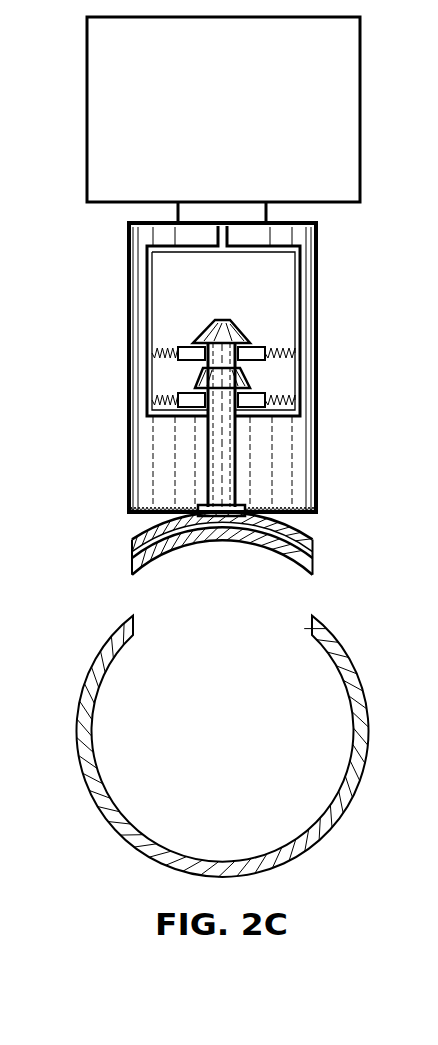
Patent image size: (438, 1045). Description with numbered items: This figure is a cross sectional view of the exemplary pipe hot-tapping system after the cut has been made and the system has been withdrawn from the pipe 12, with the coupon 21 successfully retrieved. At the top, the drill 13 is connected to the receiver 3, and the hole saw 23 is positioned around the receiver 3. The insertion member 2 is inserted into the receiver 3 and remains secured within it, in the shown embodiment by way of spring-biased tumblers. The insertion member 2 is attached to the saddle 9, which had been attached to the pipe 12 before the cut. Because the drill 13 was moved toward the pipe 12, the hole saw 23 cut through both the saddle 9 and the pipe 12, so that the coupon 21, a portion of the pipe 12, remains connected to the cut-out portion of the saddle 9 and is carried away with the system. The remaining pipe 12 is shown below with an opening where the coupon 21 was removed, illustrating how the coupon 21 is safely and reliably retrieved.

The drill 13 is at (100, 60).
The hole saw 23 is at (128, 333).
The receiver 3 is at (147, 282).
The insertion member 2 is at (222, 462).
The saddle 9 is at (313, 540).
The coupon 21 is at (223, 538).
The pipe 12 is at (314, 556).